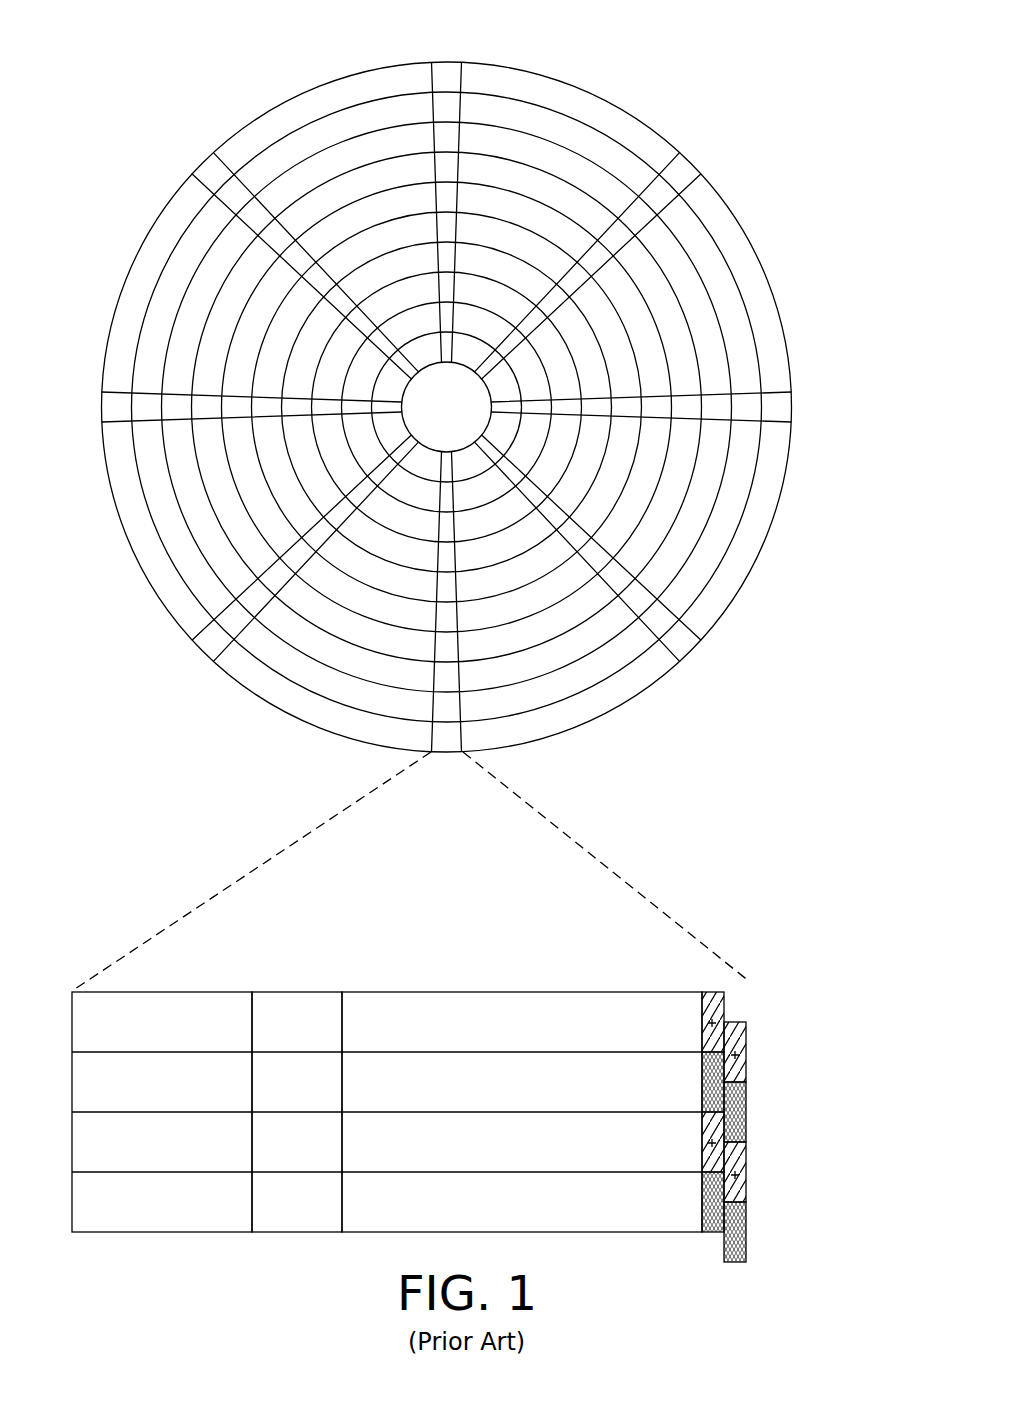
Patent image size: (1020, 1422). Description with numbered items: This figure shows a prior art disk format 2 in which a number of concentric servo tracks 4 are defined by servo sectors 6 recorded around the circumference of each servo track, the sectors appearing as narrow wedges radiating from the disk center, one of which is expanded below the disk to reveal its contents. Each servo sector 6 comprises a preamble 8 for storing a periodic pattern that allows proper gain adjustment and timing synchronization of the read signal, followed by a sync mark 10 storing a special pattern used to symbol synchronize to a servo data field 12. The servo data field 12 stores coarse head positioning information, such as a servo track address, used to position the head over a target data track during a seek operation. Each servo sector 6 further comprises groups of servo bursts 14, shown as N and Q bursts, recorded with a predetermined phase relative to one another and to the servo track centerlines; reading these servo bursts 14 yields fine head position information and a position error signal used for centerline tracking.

The disk format 2 is at (186, 67).
The servo tracks 4 is at (587, 112).
The servo sectors 6 is at (292, 828).
The preamble 8 is at (168, 992).
The sync mark 10 is at (299, 992).
The servo data field 12 is at (507, 992).
The servo bursts 14 is at (745, 986).